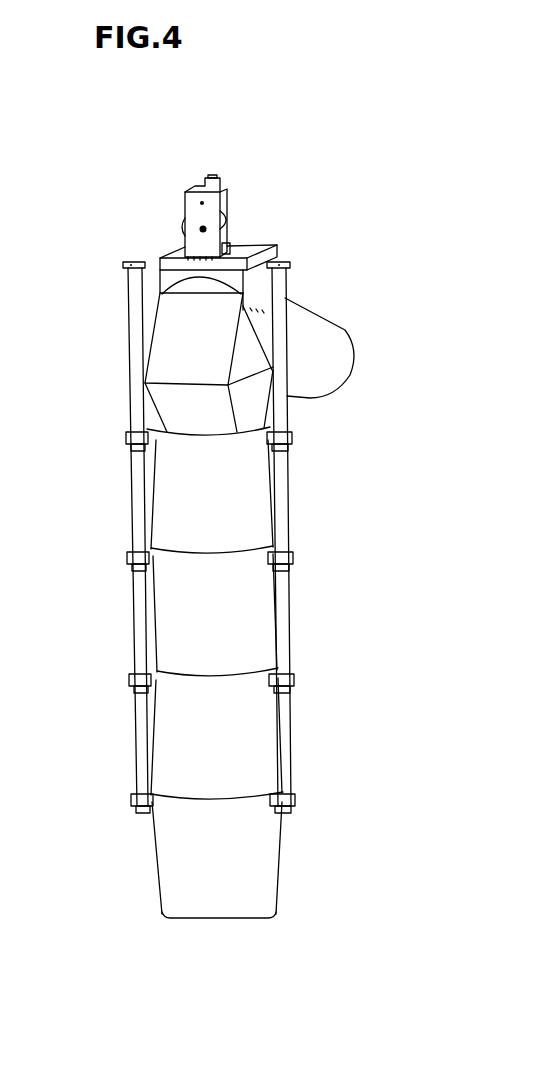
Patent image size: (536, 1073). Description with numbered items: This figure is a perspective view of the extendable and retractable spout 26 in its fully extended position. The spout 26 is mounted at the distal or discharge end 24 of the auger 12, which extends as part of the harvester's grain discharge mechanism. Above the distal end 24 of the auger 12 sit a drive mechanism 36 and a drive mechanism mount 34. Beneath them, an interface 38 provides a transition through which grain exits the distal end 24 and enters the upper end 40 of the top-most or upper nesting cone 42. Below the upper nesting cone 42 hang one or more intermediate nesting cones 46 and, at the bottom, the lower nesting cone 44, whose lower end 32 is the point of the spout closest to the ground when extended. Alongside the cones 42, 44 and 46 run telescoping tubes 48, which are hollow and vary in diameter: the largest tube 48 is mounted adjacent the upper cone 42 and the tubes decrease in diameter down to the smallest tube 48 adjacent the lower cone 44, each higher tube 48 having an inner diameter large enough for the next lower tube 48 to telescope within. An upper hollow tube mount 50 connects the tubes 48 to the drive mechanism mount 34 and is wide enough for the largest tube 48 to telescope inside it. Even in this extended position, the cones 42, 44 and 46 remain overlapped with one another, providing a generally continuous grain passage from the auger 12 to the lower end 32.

The auger 12 is at (323, 331).
The distal end of auger 24 is at (200, 280).
The extendable and retractable spout 26 is at (115, 632).
The lower end of spout 32 is at (195, 919).
The drive mechanism mount 34 is at (260, 281).
The drive mechanism 36 is at (232, 220).
The interface 38 is at (162, 353).
The upper end of upper nesting cone 40 is at (143, 431).
The upper nesting cone 42 is at (166, 497).
The lower nesting cone 44 is at (170, 850).
The intermediate nesting cone 46 is at (170, 622).
The telescoping tube 48 is at (133, 465).
The upper hollow tube mount 50 is at (130, 296).